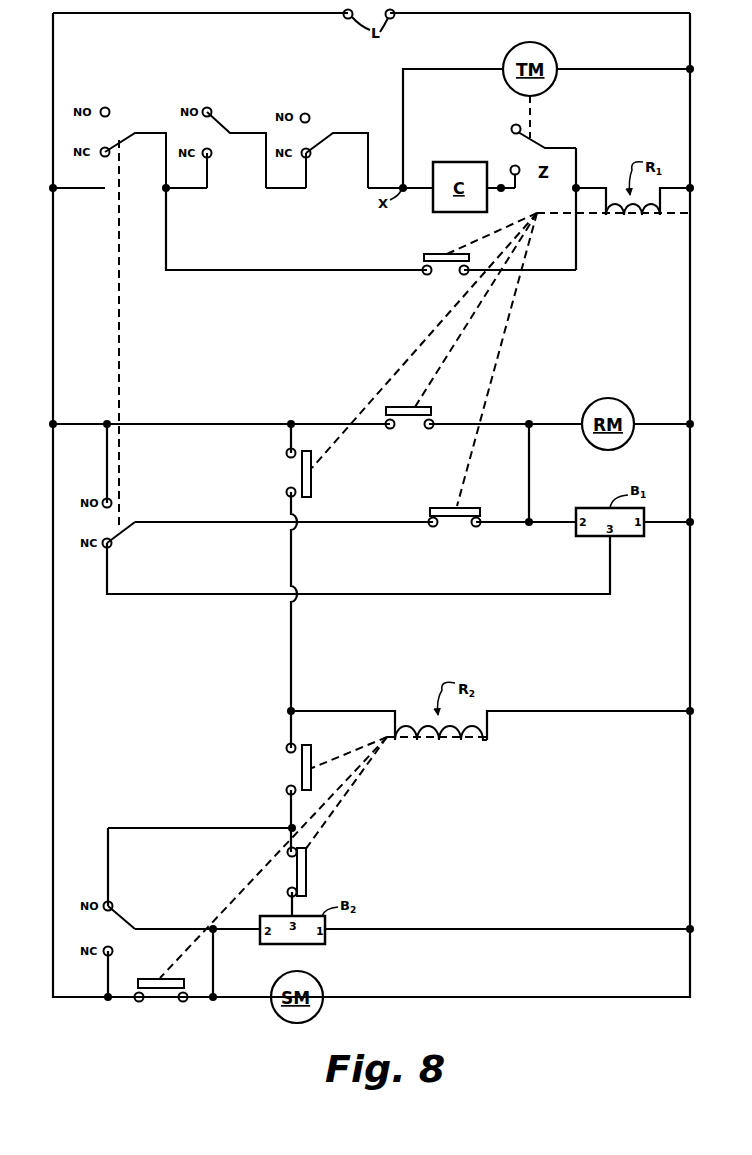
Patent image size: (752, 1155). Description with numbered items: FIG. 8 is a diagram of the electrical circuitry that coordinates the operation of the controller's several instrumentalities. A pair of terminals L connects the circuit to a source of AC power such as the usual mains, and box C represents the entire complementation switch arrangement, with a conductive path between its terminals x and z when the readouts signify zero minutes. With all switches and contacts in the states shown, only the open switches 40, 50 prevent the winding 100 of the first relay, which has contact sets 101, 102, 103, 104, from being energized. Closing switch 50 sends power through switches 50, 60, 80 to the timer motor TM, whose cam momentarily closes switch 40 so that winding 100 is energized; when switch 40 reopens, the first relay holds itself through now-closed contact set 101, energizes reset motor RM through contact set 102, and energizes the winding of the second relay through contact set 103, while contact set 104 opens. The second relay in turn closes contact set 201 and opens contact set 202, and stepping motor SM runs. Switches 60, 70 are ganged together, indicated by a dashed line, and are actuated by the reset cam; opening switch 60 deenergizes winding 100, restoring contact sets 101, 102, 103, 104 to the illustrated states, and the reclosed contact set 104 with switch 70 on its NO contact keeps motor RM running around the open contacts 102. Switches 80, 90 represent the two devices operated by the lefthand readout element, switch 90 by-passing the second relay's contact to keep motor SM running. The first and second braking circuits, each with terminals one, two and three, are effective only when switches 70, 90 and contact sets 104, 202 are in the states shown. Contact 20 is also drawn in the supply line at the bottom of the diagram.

The door switch contact 20 is at (168, 1005).
The switch 40 is at (531, 124).
The switch 50 is at (233, 115).
The switch 60 is at (120, 126).
The switch 70 is at (130, 503).
The switch 80 is at (322, 118).
The switch 90 is at (140, 915).
The winding 100 is at (633, 225).
The contact set 101 is at (442, 278).
The contact set 102 is at (420, 436).
The contact set 103 is at (292, 476).
The contact set 104 is at (462, 532).
The contact set 201 is at (292, 770).
The contact set 202 is at (280, 880).